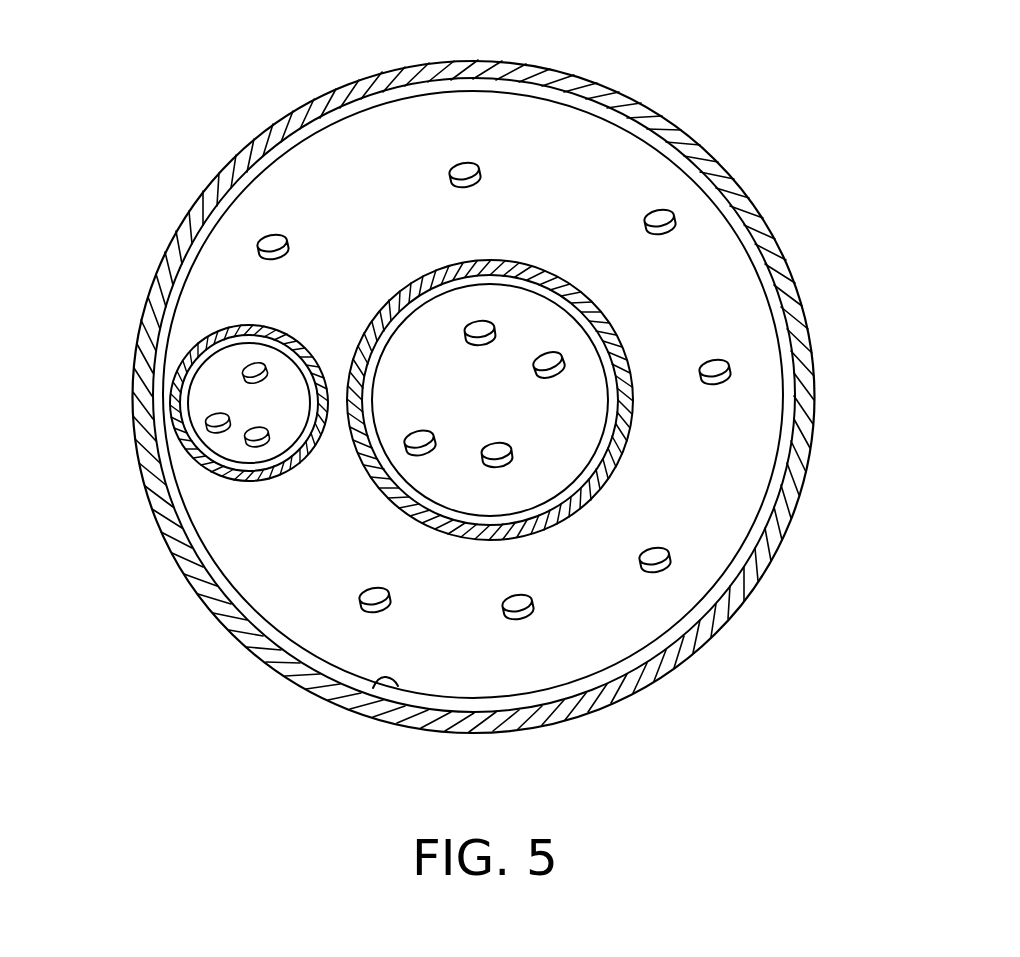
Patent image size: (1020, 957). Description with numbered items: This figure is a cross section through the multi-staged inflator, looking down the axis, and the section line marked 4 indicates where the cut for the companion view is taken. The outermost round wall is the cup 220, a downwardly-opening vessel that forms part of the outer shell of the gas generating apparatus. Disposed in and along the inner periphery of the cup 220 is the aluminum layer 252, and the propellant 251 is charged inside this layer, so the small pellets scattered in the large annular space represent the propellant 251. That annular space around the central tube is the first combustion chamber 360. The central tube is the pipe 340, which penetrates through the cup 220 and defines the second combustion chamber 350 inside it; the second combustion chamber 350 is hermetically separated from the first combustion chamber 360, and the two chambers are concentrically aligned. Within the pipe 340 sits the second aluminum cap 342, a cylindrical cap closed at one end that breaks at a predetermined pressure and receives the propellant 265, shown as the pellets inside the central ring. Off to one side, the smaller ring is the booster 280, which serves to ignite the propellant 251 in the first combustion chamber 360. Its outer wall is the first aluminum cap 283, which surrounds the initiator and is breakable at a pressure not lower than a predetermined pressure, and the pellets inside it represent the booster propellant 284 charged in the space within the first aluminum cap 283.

The cup 220 is at (587, 90).
The first combustion chamber 360 is at (613, 618).
The pipe 340 is at (437, 277).
The second aluminum cap 342 is at (425, 468).
The second combustion chamber 350 is at (518, 327).
The booster 280 is at (230, 497).
The first aluminum cap 283 is at (184, 432).
The booster propellant 284 is at (248, 370).
The propellant 265 is at (538, 368).
The propellant 251 is at (505, 605).
The aluminum layer 252 is at (372, 684).
The section line 4- 4 is at (117, 408).